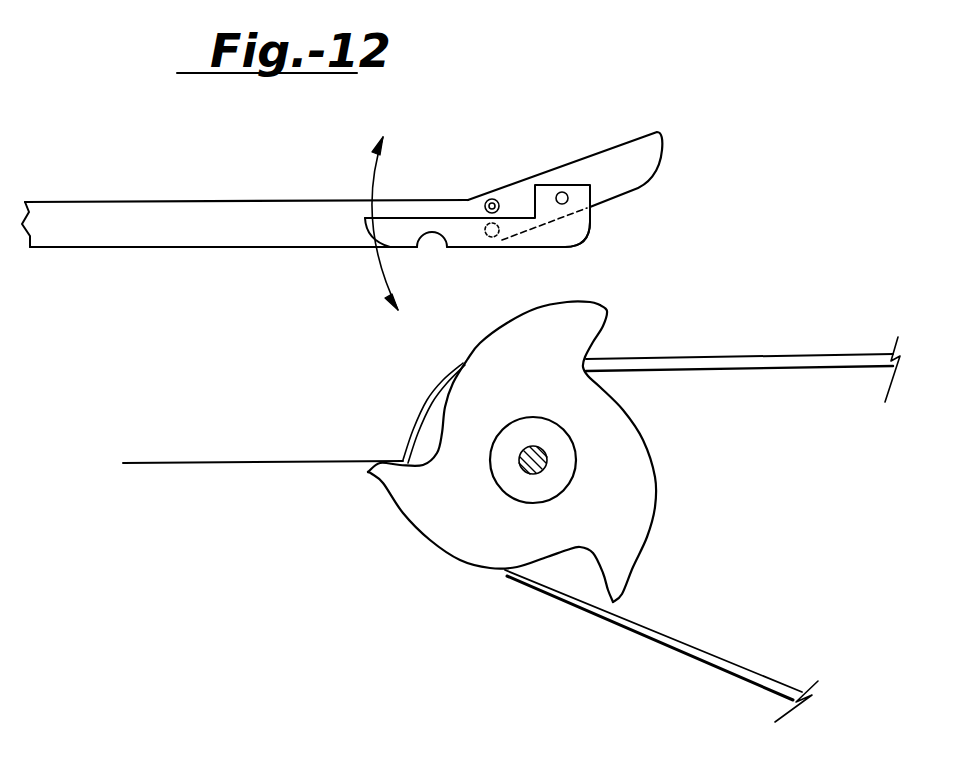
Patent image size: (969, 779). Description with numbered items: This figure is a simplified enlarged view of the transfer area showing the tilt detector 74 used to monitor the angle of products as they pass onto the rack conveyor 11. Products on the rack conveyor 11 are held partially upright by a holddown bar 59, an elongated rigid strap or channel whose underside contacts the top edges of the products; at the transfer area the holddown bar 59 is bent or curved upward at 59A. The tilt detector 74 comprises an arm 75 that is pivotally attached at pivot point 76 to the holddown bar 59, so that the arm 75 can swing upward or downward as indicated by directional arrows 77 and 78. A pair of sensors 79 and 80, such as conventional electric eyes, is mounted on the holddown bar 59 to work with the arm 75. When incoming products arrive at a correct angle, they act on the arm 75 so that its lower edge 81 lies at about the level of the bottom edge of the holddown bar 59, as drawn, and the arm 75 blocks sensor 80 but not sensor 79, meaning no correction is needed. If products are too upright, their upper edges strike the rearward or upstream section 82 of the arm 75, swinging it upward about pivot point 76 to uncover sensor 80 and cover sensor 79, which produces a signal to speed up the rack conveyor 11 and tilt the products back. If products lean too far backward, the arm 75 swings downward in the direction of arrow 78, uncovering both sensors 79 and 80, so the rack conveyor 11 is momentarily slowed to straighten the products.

The rack conveyor 11 is at (185, 452).
The holddown bar 59 is at (262, 200).
The upwardly bent section of holddown bar 59A is at (622, 160).
The tilt detector 74 is at (465, 193).
The arm 75 is at (427, 218).
The pivot point 76 is at (563, 191).
The directional arrow 77 is at (373, 172).
The directional arrow 78 is at (382, 278).
The sensor 79 is at (492, 199).
The sensor 80 is at (486, 240).
The lower edge of arm 81 is at (420, 248).
The rearward section of arm 82 is at (583, 246).